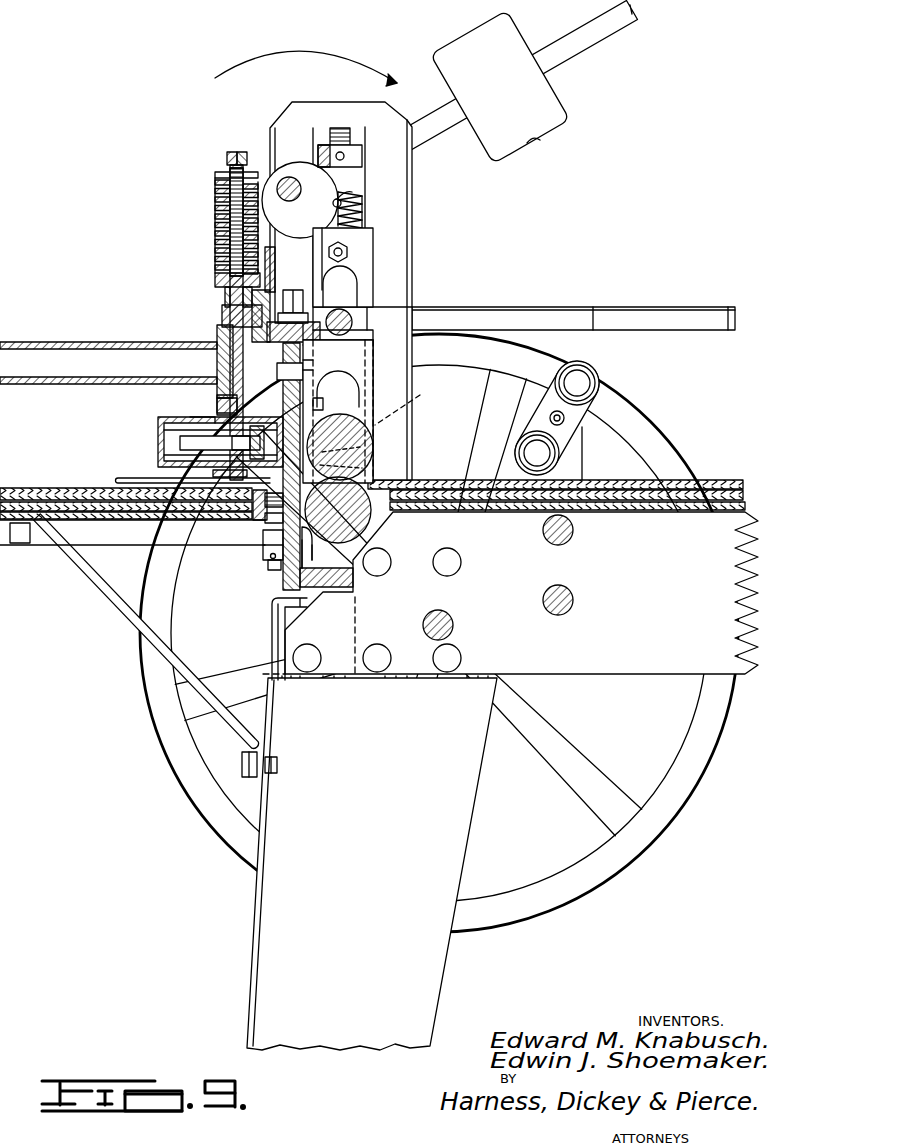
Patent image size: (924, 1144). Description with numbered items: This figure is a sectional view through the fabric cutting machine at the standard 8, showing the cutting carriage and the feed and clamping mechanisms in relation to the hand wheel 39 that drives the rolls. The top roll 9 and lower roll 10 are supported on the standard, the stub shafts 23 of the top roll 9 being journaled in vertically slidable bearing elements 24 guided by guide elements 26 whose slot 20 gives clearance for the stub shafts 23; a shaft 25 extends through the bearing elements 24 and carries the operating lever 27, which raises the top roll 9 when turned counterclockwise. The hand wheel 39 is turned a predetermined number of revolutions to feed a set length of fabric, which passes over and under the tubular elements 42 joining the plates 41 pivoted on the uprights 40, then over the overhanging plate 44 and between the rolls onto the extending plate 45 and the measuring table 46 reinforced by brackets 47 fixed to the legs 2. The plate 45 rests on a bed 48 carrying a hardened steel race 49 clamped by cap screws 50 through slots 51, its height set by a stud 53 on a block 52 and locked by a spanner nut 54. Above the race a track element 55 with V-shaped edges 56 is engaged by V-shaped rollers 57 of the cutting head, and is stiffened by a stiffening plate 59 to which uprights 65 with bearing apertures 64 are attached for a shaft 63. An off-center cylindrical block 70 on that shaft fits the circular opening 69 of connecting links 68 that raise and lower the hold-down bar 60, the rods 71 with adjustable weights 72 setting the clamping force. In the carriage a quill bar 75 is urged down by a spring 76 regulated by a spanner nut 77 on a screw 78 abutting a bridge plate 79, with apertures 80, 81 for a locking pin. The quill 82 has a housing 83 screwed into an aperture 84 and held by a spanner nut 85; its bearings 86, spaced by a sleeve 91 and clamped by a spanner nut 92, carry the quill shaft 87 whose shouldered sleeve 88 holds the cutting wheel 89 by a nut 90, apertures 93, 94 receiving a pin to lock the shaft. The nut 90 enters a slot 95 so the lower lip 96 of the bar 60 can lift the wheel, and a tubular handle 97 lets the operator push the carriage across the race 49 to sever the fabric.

The legs 2 is at (253, 897).
The standard 8 is at (393, 245).
The top roll 9 is at (367, 438).
The lower roll 10 is at (383, 527).
The slot 20 is at (370, 397).
The stub shafts 23 is at (411, 405).
The bearing elements 24 is at (365, 330).
The shaft 25 is at (340, 300).
The guide elements 26 is at (377, 347).
The operating lever 27 is at (573, 310).
The hand wheel 39 is at (627, 852).
The uprights 40 is at (578, 445).
The plates 41 is at (550, 380).
The tubular elements 42 is at (590, 368).
The overhanging plate 44 is at (403, 480).
The extending plate 45 is at (338, 510).
The measuring table 46 is at (58, 490).
The brackets 47 is at (110, 613).
The bed 48 is at (273, 595).
The hardened steel race 49 is at (316, 554).
The cap screws 50 is at (253, 527).
The slots 51 is at (262, 535).
The block 52 is at (263, 558).
The stud 53 is at (268, 572).
The spanner nut 54 is at (268, 562).
The track element 55 is at (272, 295).
The V-shaped edges 56 is at (215, 280).
The V-shaped rollers 57 is at (270, 245).
The stiffening plate 59 is at (352, 312).
The hold-down bar 60 is at (297, 387).
The shaft 63 is at (328, 178).
The bearing apertures 64 is at (290, 192).
The uprights 65 is at (318, 140).
The connecting links 68 is at (362, 230).
The circular opening 69 is at (362, 205).
The cylindrical block 70 is at (317, 160).
The rods 71 is at (423, 143).
The adjustable weights 72 is at (547, 130).
The quill bar 75 is at (238, 357).
The spring 76 is at (212, 235).
The spanner nut 77 is at (215, 174).
The screw 78 is at (228, 158).
The bridge plate 79 is at (246, 152).
The aperture 80 is at (224, 316).
The aperture 81 is at (226, 297).
The quill 82 is at (160, 420).
The housing 83 is at (180, 450).
The aperture 84 is at (226, 405).
The spanner nut 85 is at (220, 483).
The bearings 86 is at (187, 467).
The quill shaft 87 is at (187, 423).
The shouldered sleeve 88 is at (318, 390).
The cutting wheel 89 is at (340, 447).
The nut 90 is at (312, 425).
The sleeve 91 is at (236, 443).
The spanner nut 92 is at (275, 365).
The aperture 93 is at (203, 418).
The aperture 94 is at (185, 440).
The slot 95 is at (341, 456).
The lower lip 96 is at (341, 470).
The tubular handle 97 is at (45, 342).